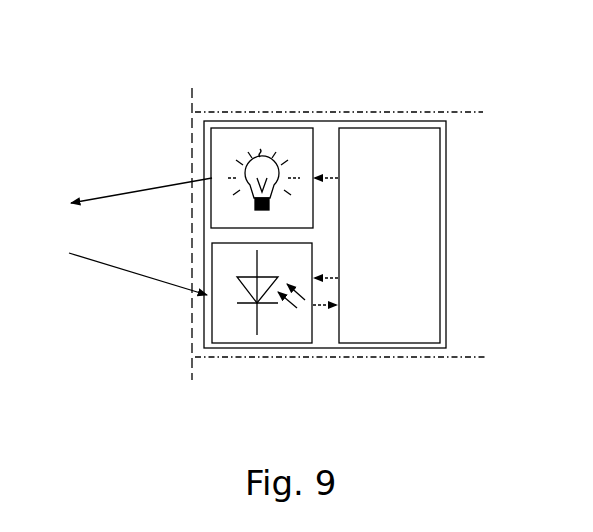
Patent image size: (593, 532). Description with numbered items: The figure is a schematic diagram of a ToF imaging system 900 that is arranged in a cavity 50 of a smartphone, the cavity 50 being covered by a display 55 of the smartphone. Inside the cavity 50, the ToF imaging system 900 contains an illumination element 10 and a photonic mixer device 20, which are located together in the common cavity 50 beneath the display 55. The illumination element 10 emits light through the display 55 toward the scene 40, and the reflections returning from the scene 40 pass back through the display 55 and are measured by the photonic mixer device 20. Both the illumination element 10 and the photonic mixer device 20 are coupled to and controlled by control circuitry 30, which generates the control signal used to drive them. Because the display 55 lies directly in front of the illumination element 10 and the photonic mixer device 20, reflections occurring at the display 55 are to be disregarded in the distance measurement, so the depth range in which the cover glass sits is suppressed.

The illumination element 10 is at (266, 128).
The photonic mixer device 20 is at (312, 343).
The control circuitry 30 is at (384, 128).
The scene 40 is at (113, 236).
The cavity 50 is at (492, 140).
The display 55 is at (192, 88).
The ToF imaging system 900 is at (446, 348).